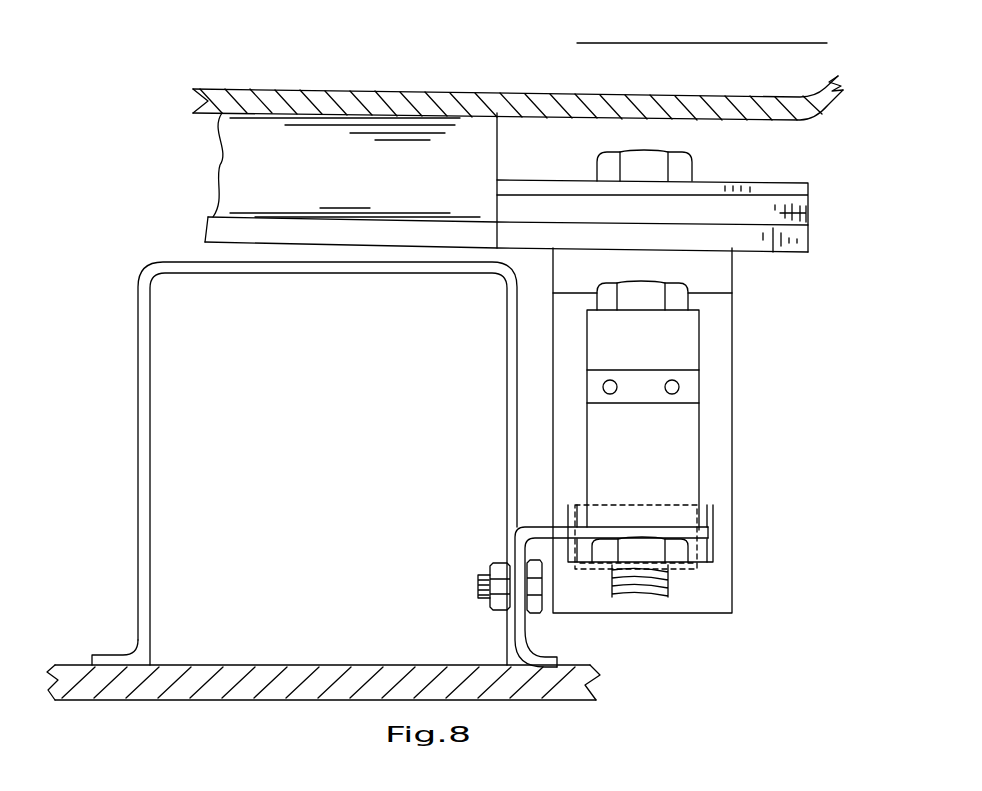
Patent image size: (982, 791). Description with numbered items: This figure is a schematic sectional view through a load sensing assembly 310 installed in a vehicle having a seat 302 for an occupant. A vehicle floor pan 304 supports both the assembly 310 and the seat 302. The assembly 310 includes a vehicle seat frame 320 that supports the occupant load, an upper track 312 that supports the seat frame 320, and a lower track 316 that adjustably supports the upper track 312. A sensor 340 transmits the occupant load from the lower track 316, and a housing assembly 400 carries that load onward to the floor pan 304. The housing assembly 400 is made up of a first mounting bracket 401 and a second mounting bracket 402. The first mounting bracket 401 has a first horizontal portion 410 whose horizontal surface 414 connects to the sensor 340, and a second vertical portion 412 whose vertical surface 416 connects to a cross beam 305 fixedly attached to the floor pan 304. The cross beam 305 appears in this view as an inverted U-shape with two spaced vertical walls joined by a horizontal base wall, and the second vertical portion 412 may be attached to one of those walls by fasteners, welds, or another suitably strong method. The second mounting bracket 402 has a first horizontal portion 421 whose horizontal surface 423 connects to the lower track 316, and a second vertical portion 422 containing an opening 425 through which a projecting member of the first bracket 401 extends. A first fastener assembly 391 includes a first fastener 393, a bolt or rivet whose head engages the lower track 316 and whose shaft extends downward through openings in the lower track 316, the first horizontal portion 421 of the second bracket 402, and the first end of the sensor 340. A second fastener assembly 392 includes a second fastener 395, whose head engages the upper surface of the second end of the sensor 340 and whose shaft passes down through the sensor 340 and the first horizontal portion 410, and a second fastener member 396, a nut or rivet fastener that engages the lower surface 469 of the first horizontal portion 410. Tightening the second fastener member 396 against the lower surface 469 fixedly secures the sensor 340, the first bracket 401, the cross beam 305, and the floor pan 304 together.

The seat 302 is at (660, 62).
The vehicle floor pan 304 is at (150, 675).
The cross beam 305 is at (135, 592).
The load sensing assembly 310 is at (113, 130).
The upper track 312 is at (262, 170).
The lower track 316 is at (780, 213).
The vehicle seat frame 320 is at (247, 100).
The sensor 340 is at (707, 460).
The first fastener assembly 391 is at (700, 156).
The second fastener assembly 392 is at (700, 282).
The first fastener 393 is at (653, 165).
The second fastener 395 is at (685, 299).
The second fastener member 396 is at (680, 552).
The housing assembly 400 is at (740, 543).
The first mounting bracket 401 is at (533, 513).
The second mounting bracket 402 is at (735, 338).
The first horizontal portion 410 is at (707, 533).
The second vertical portion 412 is at (523, 627).
The horizontal surface 414 is at (597, 525).
The vertical surface 416 is at (513, 552).
The first horizontal portion 421 is at (563, 268).
The second vertical portion 422 is at (712, 402).
The horizontal surface 423 is at (577, 250).
The opening 425 is at (575, 512).
The lower surface 469 is at (538, 540).